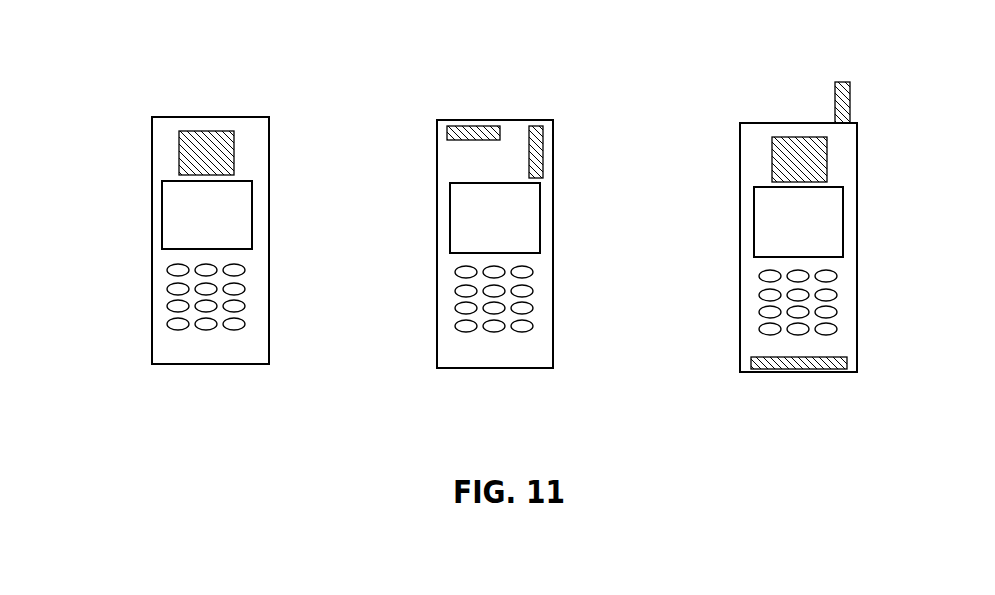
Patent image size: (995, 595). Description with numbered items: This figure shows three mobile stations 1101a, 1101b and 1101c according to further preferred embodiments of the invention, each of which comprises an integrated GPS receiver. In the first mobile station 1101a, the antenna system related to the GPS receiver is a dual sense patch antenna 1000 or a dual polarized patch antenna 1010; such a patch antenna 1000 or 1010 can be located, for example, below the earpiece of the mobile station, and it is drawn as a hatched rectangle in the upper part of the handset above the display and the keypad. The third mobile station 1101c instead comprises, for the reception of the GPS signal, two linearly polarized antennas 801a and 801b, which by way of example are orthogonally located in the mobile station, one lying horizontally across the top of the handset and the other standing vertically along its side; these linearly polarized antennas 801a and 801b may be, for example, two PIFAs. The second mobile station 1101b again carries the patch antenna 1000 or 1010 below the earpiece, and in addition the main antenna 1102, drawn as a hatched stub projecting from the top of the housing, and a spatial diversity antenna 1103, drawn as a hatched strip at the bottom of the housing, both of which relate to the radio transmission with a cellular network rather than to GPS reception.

The mobile station 1101a is at (150, 153).
The mobile station 1101b is at (740, 157).
The mobile station 1101c is at (437, 157).
The dual sense patch antenna 1000 is at (503, 119).
The dual polarized patch antenna 1010 is at (262, 83).
The linearly polarized antenna 801a is at (473, 126).
The linearly polarized antenna 801b is at (554, 142).
The main antenna 1102 is at (850, 86).
The spatial diversity antenna 1103 is at (807, 372).